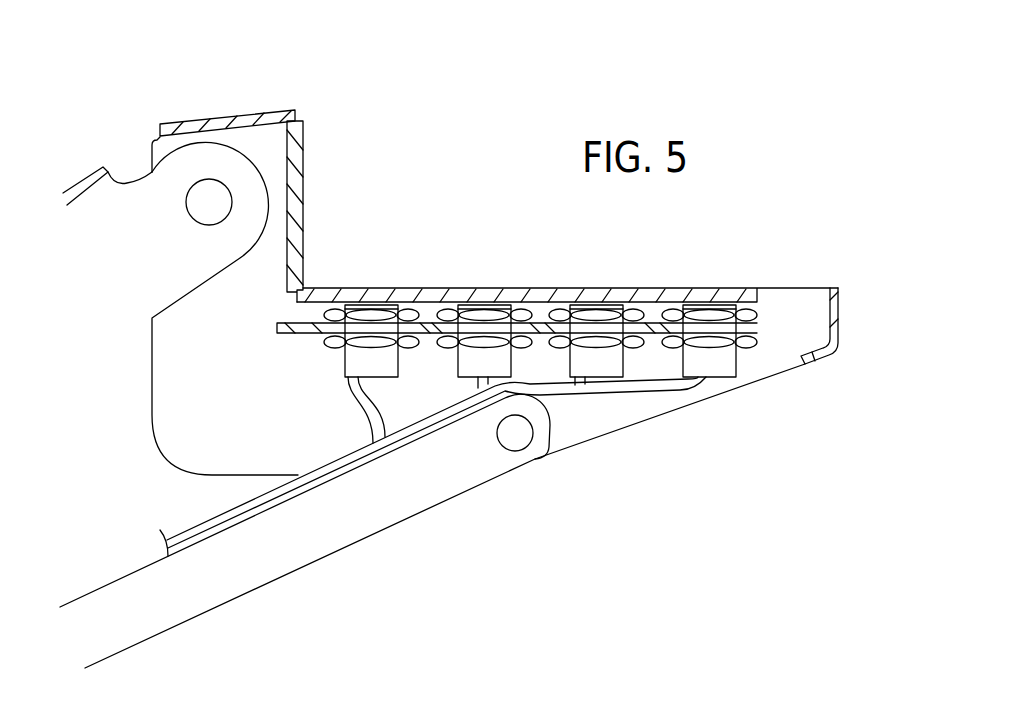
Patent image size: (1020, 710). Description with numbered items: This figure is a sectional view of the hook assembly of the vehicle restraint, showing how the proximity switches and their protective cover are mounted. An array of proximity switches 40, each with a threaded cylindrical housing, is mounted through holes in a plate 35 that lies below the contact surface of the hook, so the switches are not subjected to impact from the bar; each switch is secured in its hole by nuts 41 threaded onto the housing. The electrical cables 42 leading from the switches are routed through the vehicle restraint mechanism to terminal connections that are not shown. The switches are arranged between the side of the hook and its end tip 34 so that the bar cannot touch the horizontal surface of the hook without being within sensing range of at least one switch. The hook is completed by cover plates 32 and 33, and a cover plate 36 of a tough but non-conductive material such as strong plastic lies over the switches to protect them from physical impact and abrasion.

The cover plate 32 is at (282, 108).
The cover plate 33 is at (303, 167).
The end tip 34 is at (837, 307).
The plate 35 is at (277, 328).
The cover plate 36 is at (495, 287).
The proximity switch 40 is at (727, 365).
The nuts 41 is at (747, 338).
The electrical cable 42 is at (683, 392).